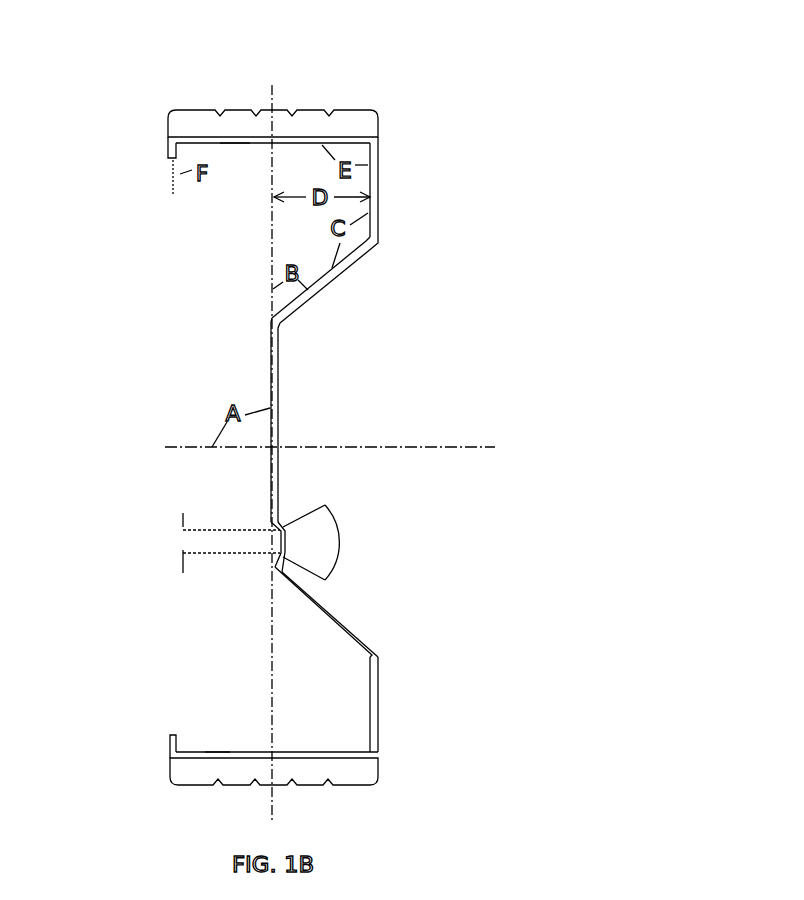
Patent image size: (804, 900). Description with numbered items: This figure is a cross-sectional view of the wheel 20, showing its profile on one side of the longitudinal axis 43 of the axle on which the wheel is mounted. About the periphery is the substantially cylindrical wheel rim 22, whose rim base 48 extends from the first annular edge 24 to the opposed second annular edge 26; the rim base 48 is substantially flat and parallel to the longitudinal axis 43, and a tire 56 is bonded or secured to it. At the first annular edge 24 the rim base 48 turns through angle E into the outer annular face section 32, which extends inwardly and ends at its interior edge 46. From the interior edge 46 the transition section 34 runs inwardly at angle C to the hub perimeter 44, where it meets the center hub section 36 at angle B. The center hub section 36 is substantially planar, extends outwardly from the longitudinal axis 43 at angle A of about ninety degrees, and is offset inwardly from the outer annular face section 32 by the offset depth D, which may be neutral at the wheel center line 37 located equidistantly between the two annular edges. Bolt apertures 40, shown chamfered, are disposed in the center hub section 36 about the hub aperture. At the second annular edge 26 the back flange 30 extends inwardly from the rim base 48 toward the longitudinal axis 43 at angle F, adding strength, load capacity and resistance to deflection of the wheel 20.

The wheel 20 is at (474, 159).
The wheel rim 22 is at (229, 92).
The first annular edge 24 is at (380, 140).
The second annular edge 26 is at (168, 138).
The back flange 30 is at (168, 155).
The outer annular face section 32 is at (377, 218).
The transition section 34 is at (290, 288).
The center hub section 36 is at (280, 357).
The wheel center line 37 is at (272, 265).
The bolt apertures 40 is at (250, 541).
The longitudinal axis 43 is at (178, 447).
The hub perimeter 44 is at (270, 325).
The interior edge 46 is at (377, 242).
The rim base 48 is at (235, 143).
The tire 56 is at (353, 108).